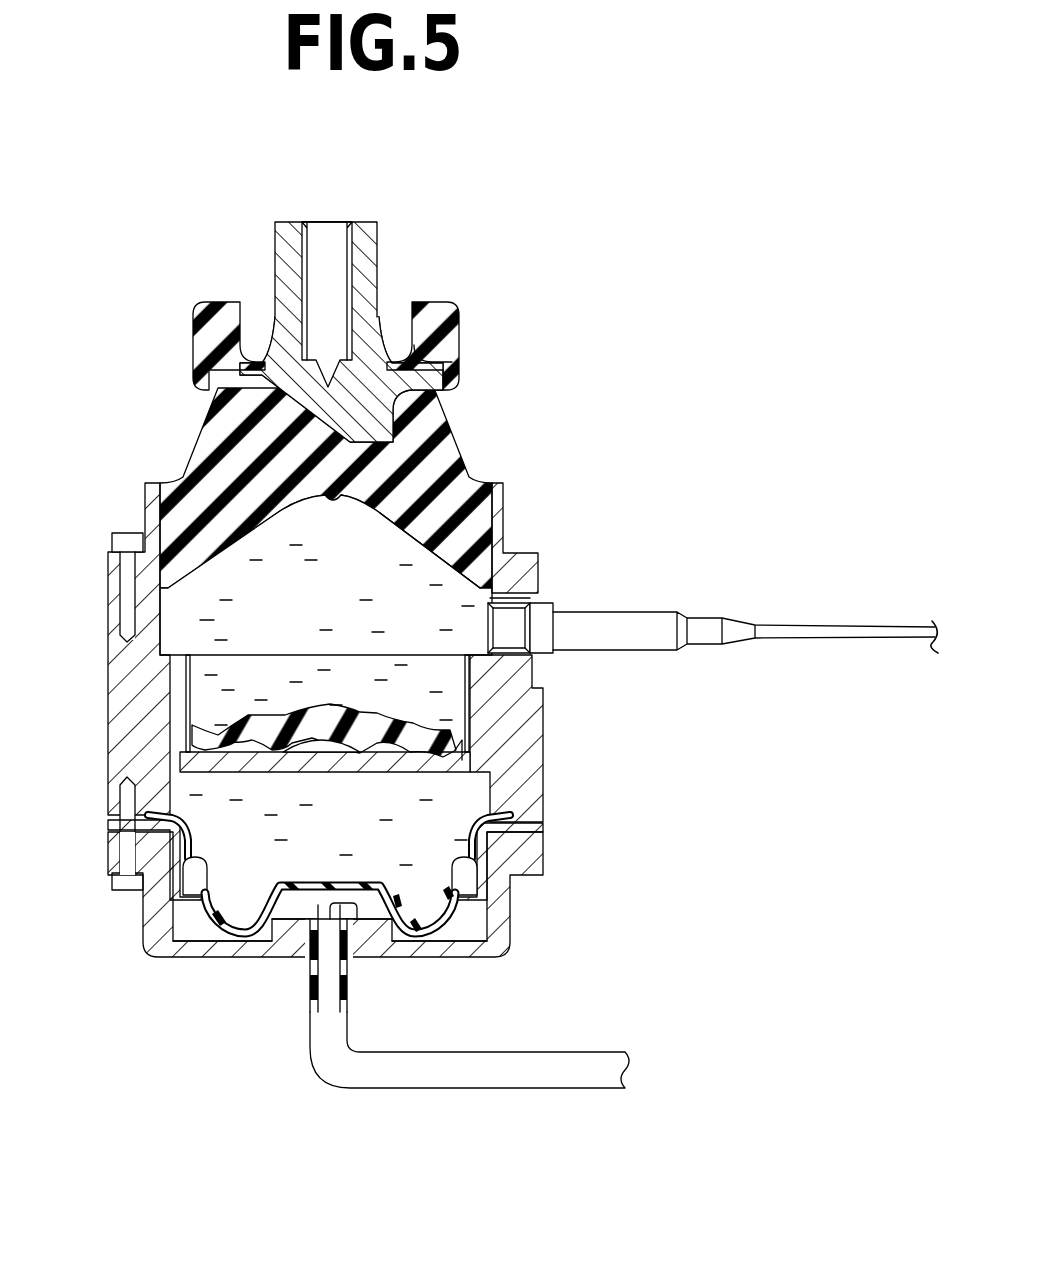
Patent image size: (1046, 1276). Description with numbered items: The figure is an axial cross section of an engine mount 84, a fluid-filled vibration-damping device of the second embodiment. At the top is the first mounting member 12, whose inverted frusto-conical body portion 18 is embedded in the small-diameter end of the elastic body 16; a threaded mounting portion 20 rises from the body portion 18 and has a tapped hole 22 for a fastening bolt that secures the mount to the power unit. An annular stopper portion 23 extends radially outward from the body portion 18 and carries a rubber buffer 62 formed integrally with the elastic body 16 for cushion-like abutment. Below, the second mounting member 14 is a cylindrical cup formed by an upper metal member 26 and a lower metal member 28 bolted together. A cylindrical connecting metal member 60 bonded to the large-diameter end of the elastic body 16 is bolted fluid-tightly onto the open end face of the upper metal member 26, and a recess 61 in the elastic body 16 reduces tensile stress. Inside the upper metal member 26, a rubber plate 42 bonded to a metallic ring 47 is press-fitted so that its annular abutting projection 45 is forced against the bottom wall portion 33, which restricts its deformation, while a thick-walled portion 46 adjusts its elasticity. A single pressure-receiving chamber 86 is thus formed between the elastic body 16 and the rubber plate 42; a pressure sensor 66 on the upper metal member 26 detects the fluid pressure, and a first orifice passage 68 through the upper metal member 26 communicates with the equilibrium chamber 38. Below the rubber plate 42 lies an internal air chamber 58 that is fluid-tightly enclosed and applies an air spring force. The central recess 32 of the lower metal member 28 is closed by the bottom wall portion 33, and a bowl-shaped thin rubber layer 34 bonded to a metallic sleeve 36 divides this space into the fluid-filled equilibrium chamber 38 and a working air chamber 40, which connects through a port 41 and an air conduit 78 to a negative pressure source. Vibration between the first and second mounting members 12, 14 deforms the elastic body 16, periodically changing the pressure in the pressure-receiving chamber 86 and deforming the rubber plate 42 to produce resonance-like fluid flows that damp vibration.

The first mounting member 12 is at (397, 277).
The second mounting member 14 is at (588, 808).
The elastic body 16 is at (440, 467).
The body portion 18 is at (277, 397).
The threaded mounting portion 20 is at (287, 253).
The tapped hole 22 is at (310, 263).
The stopper portion 23 is at (423, 381).
The upper metal member 26 is at (528, 738).
The lower metal member 28 is at (497, 920).
The central recess 32 is at (363, 915).
The bottom wall portion 33 is at (292, 748).
The thin rubber layer 34 is at (230, 923).
The metallic sleeve 36 is at (485, 853).
The equilibrium chamber 38 is at (268, 853).
The working air chamber 40 is at (293, 905).
The port 41 is at (333, 913).
The rubber plate 42 is at (373, 707).
The abutting projection 45 is at (288, 750).
The thick-walled portion 46 is at (460, 898).
The metallic ring 47 is at (467, 747).
The internal air chamber 58 is at (325, 745).
The connecting metal member 60 is at (523, 573).
The recess 61 is at (388, 450).
The rubber buffer 62 is at (432, 318).
The pressure sensor 66 is at (658, 625).
The first orifice passage 68 is at (120, 780).
The air conduit 78 is at (462, 1073).
The engine mount 84 is at (525, 308).
The pressure-receiving chamber 86 is at (338, 598).